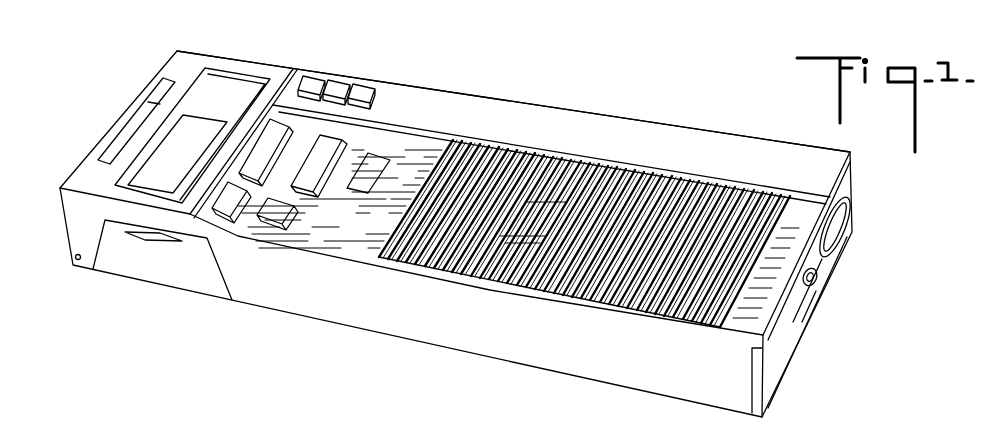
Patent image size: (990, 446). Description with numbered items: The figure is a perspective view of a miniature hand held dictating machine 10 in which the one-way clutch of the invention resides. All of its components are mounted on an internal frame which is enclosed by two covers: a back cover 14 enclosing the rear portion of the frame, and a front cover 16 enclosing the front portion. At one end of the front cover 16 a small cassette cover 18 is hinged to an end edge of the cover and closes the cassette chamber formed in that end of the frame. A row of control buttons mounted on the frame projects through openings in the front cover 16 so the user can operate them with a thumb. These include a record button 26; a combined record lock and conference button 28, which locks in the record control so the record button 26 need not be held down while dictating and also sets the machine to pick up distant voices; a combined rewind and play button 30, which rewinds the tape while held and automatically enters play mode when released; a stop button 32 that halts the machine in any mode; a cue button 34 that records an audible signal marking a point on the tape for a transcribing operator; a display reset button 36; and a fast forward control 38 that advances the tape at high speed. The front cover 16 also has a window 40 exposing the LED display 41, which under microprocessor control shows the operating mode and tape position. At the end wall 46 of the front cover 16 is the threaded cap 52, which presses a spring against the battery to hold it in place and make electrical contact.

The dictating machine 10 is at (490, 222).
The back cover 14 is at (411, 302).
The front cover 16 is at (543, 103).
The cassette cover 18 is at (130, 267).
The record button 26 is at (278, 119).
The combined record lock and conference button 28 is at (220, 210).
The combined rewind and play button 30 is at (347, 148).
The stop button 32 is at (287, 222).
The cue button 34 is at (322, 78).
The display reset button 36 is at (345, 80).
The fast forward control 38 is at (370, 83).
The window 40 is at (168, 143).
The LED display 41 is at (162, 152).
The end wall 46 is at (797, 310).
The cap 52 is at (843, 233).